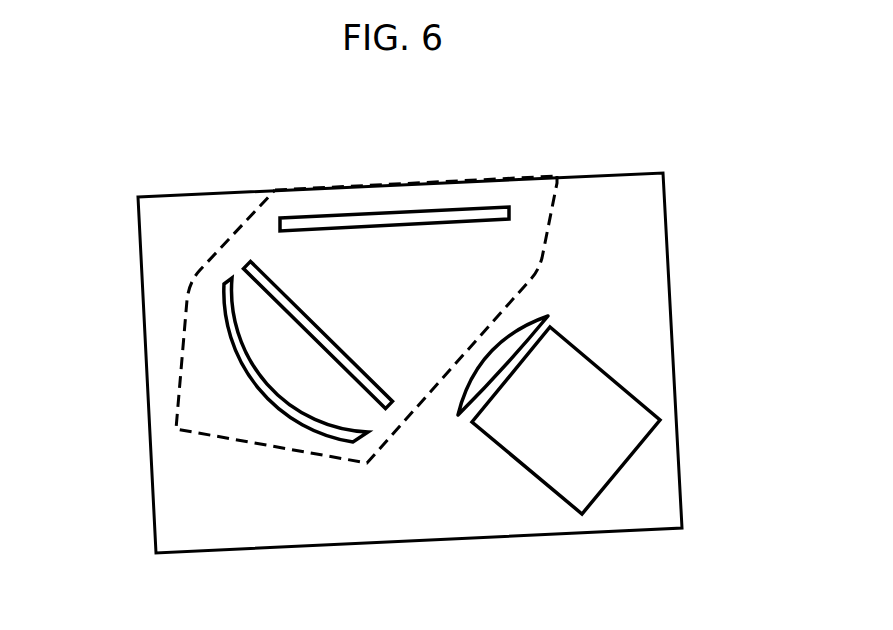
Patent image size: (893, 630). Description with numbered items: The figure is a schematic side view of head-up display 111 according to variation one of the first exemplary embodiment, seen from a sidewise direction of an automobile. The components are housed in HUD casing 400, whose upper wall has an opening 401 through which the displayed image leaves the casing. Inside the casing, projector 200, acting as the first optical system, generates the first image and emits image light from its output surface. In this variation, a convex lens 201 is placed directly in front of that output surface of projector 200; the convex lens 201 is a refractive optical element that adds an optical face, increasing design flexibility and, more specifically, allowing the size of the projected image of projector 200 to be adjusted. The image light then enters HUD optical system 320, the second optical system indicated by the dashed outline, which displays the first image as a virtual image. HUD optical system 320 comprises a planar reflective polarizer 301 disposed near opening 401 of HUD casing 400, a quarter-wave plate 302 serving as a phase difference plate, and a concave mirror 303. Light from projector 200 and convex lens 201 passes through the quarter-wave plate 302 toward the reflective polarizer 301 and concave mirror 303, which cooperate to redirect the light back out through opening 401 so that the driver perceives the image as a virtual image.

The head-up display 111 is at (638, 513).
The projector 200 is at (627, 387).
The convex lens 201 is at (548, 315).
The reflective polarizer 301 is at (298, 216).
The quarter-wave plate 302 is at (247, 268).
The concave mirror 303 is at (230, 340).
The HUD optical system 320 is at (250, 445).
The HUD casing 400 is at (458, 542).
The opening 401 is at (433, 182).